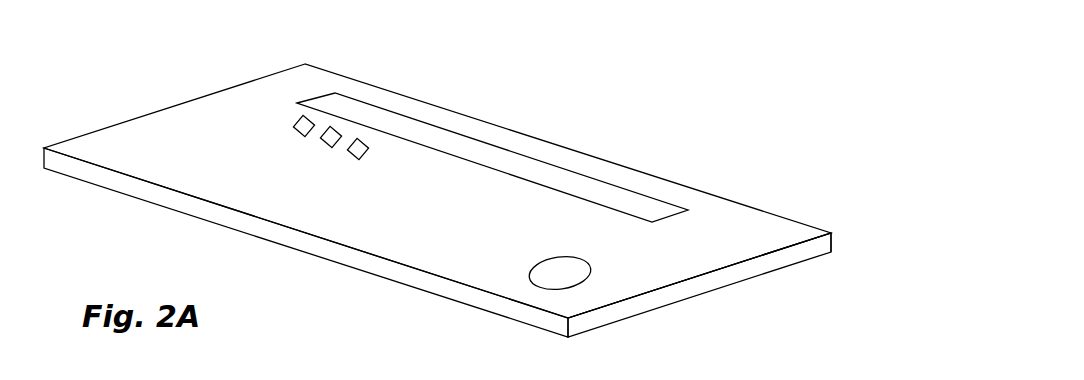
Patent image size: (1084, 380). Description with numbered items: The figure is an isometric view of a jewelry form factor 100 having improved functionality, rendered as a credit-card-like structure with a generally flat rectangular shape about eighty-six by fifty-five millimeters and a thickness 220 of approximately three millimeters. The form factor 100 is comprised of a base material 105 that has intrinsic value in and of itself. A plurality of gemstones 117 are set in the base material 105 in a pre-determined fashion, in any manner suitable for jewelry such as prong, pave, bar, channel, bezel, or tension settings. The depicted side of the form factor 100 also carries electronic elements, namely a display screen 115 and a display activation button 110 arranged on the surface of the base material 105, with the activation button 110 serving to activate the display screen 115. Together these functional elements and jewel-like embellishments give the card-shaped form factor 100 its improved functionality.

The jewelry form factor 100 is at (650, 93).
The base material 105 is at (652, 253).
The display activation button 110 is at (562, 282).
The display screen 115 is at (497, 169).
The gemstones 117 is at (290, 148).
The thickness 220 is at (843, 249).